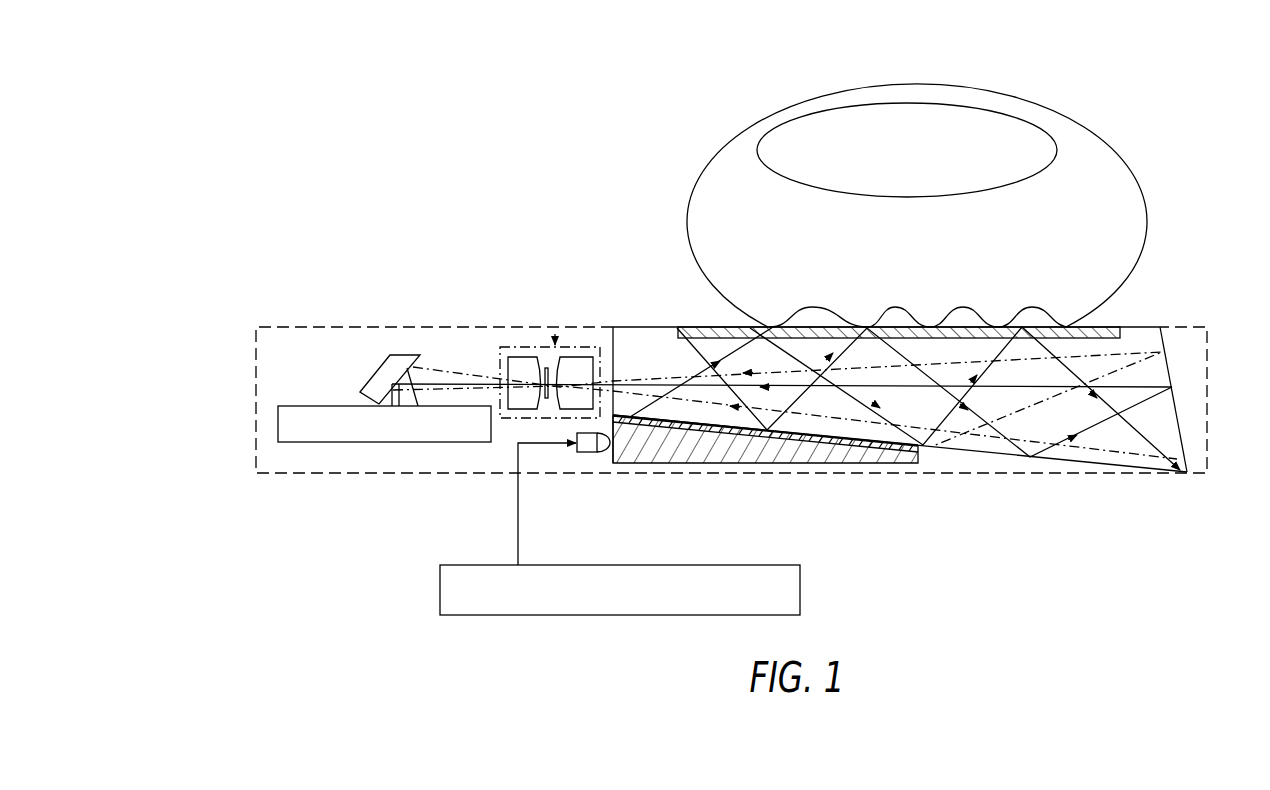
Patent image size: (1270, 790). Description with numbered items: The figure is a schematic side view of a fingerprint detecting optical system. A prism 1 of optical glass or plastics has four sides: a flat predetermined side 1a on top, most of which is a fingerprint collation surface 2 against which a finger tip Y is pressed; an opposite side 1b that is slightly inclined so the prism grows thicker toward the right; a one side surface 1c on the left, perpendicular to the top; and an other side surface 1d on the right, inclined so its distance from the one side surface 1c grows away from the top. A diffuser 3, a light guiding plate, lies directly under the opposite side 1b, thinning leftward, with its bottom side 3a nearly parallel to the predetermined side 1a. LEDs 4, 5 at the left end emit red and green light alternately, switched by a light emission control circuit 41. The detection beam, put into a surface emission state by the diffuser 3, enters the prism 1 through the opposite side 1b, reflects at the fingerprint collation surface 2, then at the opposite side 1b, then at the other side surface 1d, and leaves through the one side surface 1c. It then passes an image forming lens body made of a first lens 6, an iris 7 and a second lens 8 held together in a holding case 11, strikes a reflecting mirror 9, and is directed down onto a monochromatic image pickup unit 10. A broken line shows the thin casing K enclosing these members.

The prism 1 is at (924, 398).
The predetermined side 1a is at (1108, 325).
The opposite side 1b is at (1003, 455).
The one side surface 1c is at (612, 329).
The other side surface 1d is at (1175, 407).
The fingerprint collation surface 2 is at (712, 326).
The diffuser 3 is at (765, 471).
The bottom side 3a is at (742, 464).
The LED 4 is at (599, 481).
The LED 5 is at (582, 456).
The first lens 6 is at (583, 358).
The iris 7 is at (546, 367).
The second lens 8 is at (517, 358).
The reflecting mirror 9 is at (387, 374).
The image pickup unit 10 is at (320, 406).
The holding case 11 is at (555, 327).
The light emission control circuit 41 is at (440, 592).
The casing K is at (837, 477).
The finger tip Y is at (908, 95).